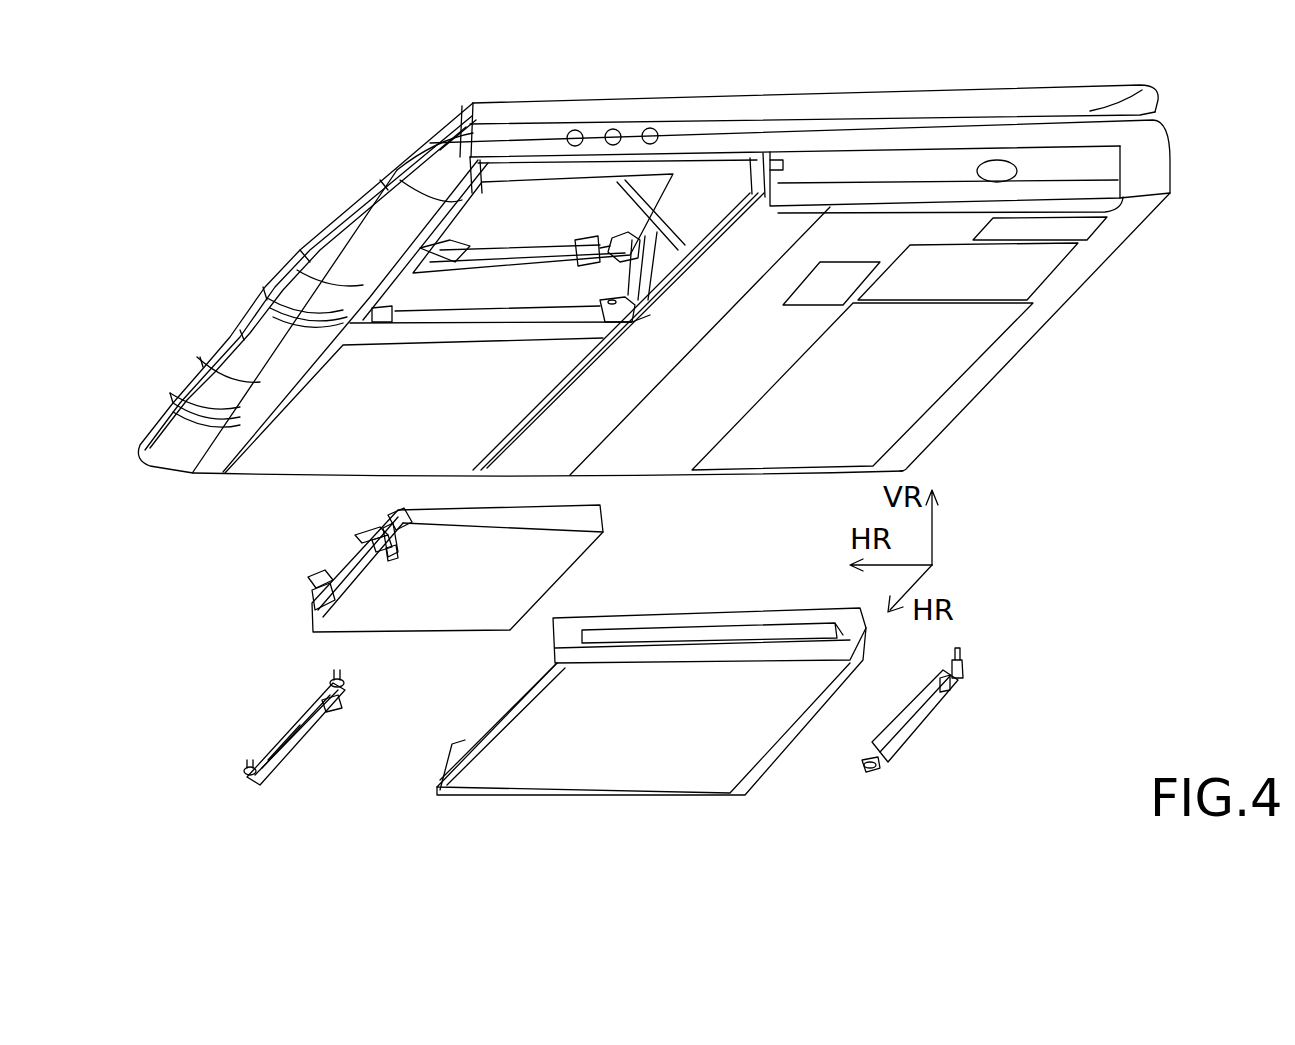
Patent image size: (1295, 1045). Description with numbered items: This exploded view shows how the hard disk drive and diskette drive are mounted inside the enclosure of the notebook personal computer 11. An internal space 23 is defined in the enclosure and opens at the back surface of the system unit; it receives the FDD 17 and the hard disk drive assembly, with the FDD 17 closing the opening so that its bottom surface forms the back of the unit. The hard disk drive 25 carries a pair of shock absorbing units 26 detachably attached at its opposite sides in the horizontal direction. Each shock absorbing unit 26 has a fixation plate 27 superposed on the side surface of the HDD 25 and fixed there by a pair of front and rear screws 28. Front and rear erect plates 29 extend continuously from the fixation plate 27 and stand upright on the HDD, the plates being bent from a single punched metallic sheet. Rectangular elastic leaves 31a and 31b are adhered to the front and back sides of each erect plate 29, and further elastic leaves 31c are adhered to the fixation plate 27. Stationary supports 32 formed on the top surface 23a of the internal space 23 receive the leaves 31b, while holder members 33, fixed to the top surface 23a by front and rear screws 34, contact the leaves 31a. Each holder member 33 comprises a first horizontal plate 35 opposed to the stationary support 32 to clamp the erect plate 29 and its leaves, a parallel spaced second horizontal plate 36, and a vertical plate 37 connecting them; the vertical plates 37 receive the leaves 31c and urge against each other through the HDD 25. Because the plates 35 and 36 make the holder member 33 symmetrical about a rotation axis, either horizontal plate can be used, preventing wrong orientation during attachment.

The notebook personal computer 11 is at (1050, 401).
The FDD 17 is at (675, 618).
The internal space 23 is at (453, 233).
The top surface of the internal space 23a is at (665, 200).
The hard disk drive 25 is at (422, 618).
The shock absorbing unit 26 is at (465, 567).
The fixation plate 27 is at (353, 580).
The screw 28 is at (322, 612).
The erect plate 29 is at (365, 541).
The elastic leaf 31a is at (368, 553).
The elastic leaf 31b is at (372, 525).
The elastic leaf 31c is at (388, 548).
The stationary support 32 is at (628, 232).
The holder member 33 is at (581, 720).
The screw 34 is at (248, 768).
The first horizontal plate 35 is at (289, 718).
The second horizontal plate 36 is at (282, 742).
The vertical plate 37 is at (334, 702).